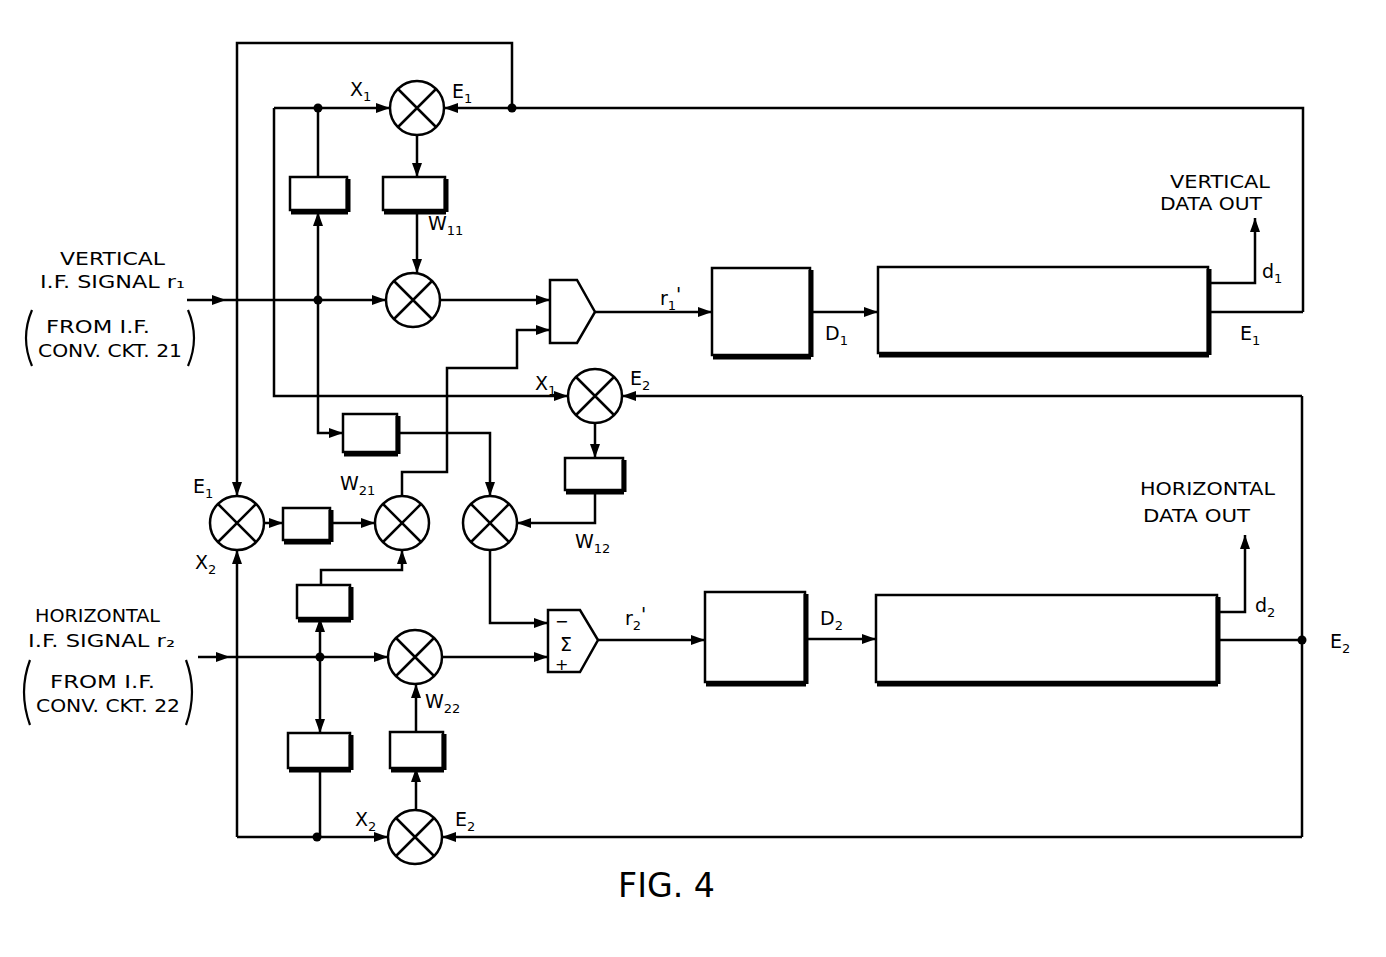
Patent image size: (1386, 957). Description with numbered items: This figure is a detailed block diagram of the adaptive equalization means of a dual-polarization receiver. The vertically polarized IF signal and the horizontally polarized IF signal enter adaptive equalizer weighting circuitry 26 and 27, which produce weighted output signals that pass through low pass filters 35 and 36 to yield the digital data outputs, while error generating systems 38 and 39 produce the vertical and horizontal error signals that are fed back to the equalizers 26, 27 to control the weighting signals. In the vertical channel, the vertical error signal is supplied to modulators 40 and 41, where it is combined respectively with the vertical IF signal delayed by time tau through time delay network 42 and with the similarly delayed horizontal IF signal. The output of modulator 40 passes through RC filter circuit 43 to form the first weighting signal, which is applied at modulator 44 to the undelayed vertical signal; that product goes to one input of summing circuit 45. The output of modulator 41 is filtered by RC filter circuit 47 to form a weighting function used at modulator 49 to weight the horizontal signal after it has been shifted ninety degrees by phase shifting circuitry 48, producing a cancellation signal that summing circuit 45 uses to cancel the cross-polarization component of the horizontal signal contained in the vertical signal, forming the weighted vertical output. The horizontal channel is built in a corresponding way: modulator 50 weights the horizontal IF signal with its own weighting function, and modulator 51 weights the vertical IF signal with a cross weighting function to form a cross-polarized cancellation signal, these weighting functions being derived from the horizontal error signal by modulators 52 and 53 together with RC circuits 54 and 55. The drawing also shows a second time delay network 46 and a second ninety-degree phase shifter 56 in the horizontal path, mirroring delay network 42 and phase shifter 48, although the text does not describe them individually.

The adaptive equalizer weighting circuitry 26 is at (500, 227).
The adaptive equalizer weighting circuitry 27 is at (512, 750).
The low pass filter 35 is at (752, 269).
The low pass filter 36 is at (736, 592).
The error generating system 38 is at (968, 267).
The error generating system 39 is at (921, 595).
The modulator 40 is at (410, 84).
The modulator 41 is at (210, 521).
The time delay network 42 is at (340, 178).
The RC filter circuit 43 is at (440, 178).
The modulator 44 is at (442, 285).
The summing circuit 45 is at (558, 278).
The delay circuit 46 is at (348, 733).
The RC filter circuit 47 is at (303, 508).
The phase shifting circuitry 48 is at (351, 603).
The modulator 49 is at (426, 514).
The modulator 50 is at (417, 632).
The modulator 51 is at (525, 485).
The modulator 52 is at (430, 858).
The modulator 53 is at (605, 376).
The RC circuit 54 is at (444, 748).
The RC circuit 55 is at (620, 459).
The 90 degree phase shifter 56 is at (367, 413).